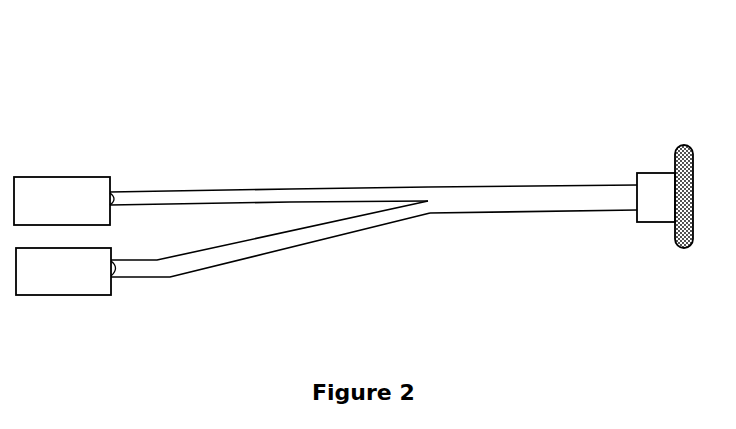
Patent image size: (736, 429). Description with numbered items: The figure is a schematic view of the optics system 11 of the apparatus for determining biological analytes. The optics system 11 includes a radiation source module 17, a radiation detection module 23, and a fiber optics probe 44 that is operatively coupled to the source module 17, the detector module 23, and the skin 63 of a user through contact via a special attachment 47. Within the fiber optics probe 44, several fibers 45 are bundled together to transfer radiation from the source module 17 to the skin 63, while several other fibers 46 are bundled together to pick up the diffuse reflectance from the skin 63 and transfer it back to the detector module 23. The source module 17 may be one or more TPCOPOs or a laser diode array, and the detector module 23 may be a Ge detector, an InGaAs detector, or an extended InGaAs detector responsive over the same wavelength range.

The optics system 11 is at (326, 103).
The radiation source module 17 is at (88, 173).
The radiation detection module 23 is at (94, 300).
The fiber optics probe 44 is at (495, 182).
The fibers 45 is at (186, 187).
The other fibers 46 is at (187, 275).
The special attachment 47 is at (637, 173).
The skin 63 is at (678, 227).